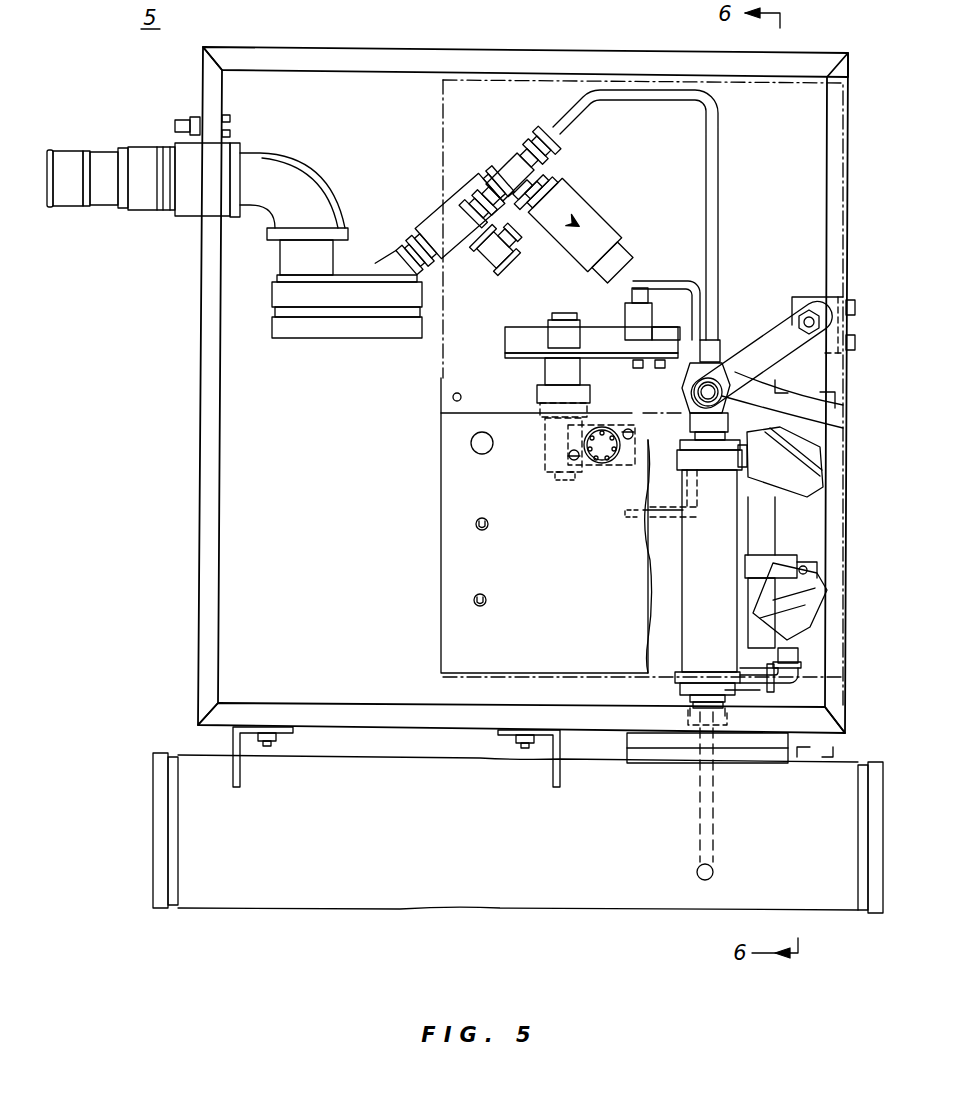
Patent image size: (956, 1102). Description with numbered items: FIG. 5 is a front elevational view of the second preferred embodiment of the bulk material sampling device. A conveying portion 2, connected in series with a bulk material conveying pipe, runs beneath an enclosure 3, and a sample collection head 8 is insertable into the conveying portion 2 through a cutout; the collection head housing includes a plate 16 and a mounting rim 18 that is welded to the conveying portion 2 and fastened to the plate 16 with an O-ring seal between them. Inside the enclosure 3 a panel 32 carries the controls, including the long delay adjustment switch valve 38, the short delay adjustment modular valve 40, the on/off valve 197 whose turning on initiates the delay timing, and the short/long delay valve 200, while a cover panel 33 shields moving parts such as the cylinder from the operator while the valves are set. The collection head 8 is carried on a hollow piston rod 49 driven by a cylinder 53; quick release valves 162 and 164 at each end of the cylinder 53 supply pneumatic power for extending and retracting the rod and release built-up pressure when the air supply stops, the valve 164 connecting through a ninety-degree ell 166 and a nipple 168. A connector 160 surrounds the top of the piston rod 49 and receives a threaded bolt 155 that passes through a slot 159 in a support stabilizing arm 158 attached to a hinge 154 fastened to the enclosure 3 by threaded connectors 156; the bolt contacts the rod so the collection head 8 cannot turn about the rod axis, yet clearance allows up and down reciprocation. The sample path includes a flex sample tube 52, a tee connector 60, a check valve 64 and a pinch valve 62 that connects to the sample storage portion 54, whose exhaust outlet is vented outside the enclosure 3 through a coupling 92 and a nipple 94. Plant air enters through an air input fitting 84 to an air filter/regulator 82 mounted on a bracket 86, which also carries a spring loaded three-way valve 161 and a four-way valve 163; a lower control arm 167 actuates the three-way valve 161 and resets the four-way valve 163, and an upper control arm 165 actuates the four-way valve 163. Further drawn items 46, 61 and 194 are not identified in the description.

The conveying portion 2 is at (340, 912).
The enclosure 3 is at (202, 478).
The sample collection head 8 is at (715, 872).
The plate 16 is at (762, 740).
The mounting rim 18 is at (643, 760).
The panel 32 is at (441, 672).
The cover panel 33 is at (443, 100).
The long delay adjustment switch valve 38 is at (471, 443).
The short delay adjustment switch modular valve 40 is at (600, 465).
The outlet fitting 46 is at (690, 708).
The hollow piston rod 49 is at (697, 812).
The flex sample tube 52 is at (720, 163).
The cylinder 53 is at (683, 592).
The sample storage portion 54 is at (350, 264).
The tee connector 60 is at (508, 162).
The drain fitting 61 is at (512, 270).
The pinch valve 62 is at (434, 222).
The check valve 64 is at (585, 205).
The air filter/regulator 82 is at (557, 333).
The air input fitting 84 is at (178, 118).
The bracket 86 is at (505, 335).
The coupling 92 is at (182, 217).
The nipple 94 is at (82, 207).
The hinge 154 is at (812, 300).
The threaded bolt 155 is at (722, 395).
The threaded connectors 156 is at (855, 308).
The support stabilizing arm 158 is at (823, 368).
The slot 159 is at (838, 398).
The connector 160 is at (683, 380).
The three-way valve 161 is at (680, 332).
The quick release valve 162 is at (812, 465).
The four-way valve 163 is at (652, 302).
The quick release valve 164 is at (812, 620).
The upper control arm 165 is at (640, 290).
The ninety-degree ell 166 is at (795, 680).
The lower control arm 167 is at (650, 535).
The nipple 168 is at (760, 690).
The link 194 is at (843, 417).
The on/off valve 197 is at (474, 600).
The short/long delay valve 200 is at (476, 524).